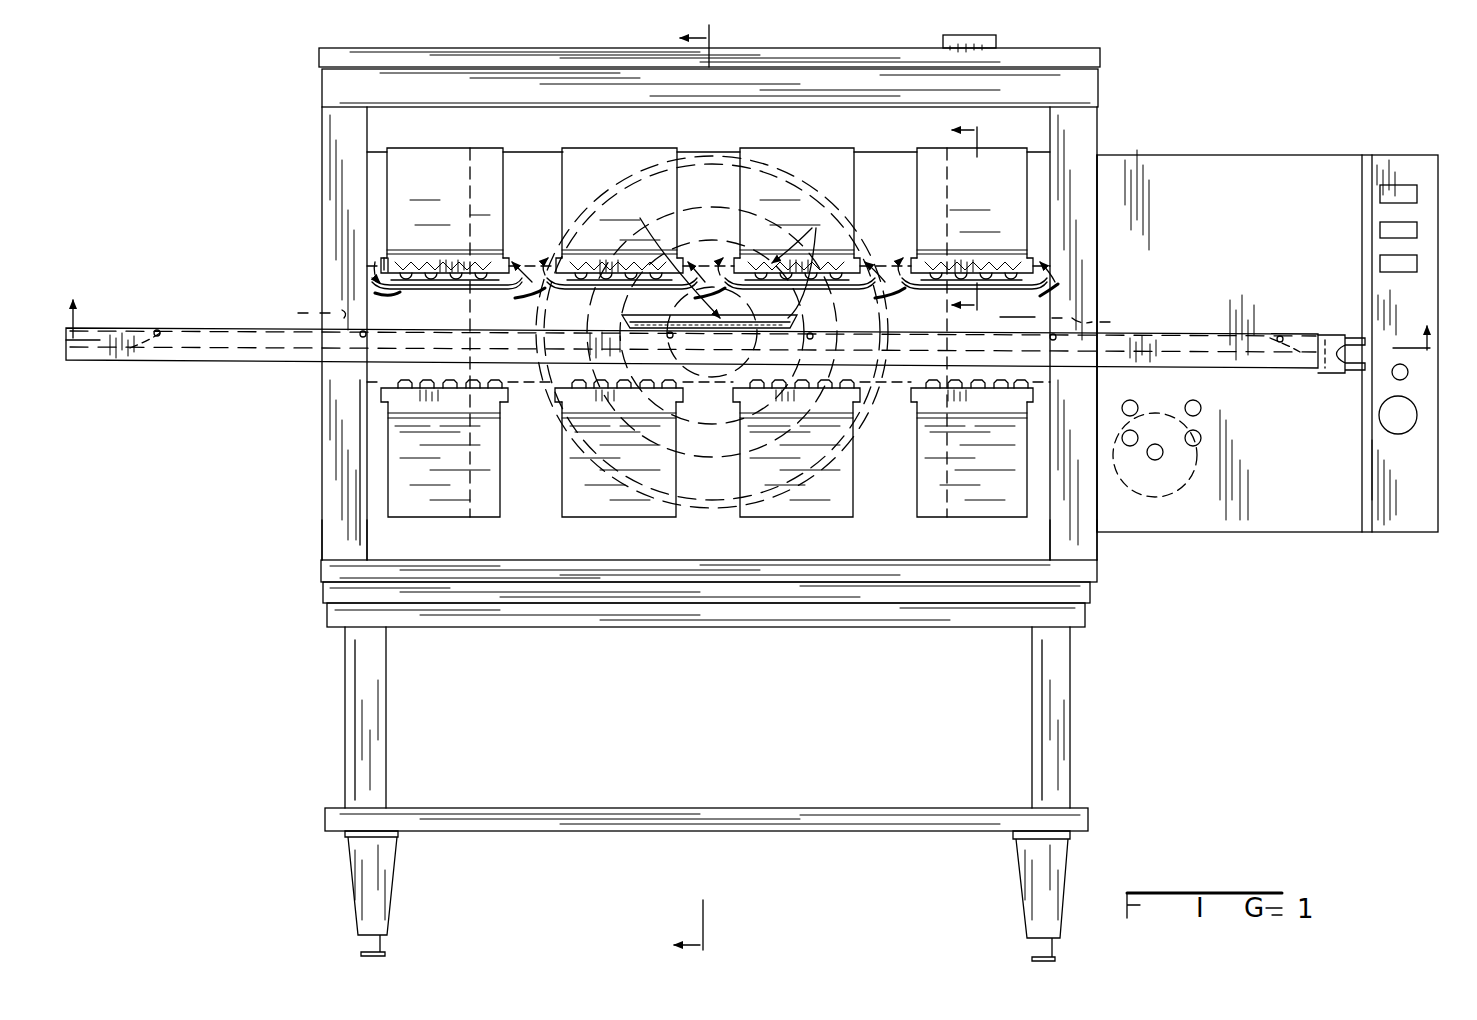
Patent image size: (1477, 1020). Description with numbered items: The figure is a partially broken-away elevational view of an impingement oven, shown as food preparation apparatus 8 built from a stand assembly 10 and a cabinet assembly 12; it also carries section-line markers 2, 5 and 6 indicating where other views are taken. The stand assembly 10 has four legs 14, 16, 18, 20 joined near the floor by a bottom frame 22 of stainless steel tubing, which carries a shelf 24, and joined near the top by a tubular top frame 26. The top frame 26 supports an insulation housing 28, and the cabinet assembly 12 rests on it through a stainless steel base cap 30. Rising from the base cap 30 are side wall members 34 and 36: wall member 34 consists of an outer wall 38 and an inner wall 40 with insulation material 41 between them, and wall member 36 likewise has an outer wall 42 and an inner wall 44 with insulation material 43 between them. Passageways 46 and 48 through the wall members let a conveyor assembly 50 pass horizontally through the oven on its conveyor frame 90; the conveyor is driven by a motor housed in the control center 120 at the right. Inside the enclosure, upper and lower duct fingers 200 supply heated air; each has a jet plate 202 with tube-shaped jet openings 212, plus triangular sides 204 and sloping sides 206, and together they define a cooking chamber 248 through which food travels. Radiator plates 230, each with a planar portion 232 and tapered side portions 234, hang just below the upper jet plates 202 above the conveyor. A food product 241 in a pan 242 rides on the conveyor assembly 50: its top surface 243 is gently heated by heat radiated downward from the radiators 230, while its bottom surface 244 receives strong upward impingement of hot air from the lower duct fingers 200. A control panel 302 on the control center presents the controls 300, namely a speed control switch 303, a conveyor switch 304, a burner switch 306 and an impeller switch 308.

The section line 2- 2 is at (678, 491).
The section line 5- 5 is at (953, 217).
The section line 6- 6 is at (749, 309).
The food preparation apparatus 8 is at (745, 624).
The stand assembly 10 is at (679, 794).
The cabinet assembly 12 is at (266, 403).
The leg 14 is at (417, 717).
The leg 16 is at (386, 680).
The leg 18 is at (990, 717).
The leg 20 is at (1032, 677).
The bottom frame 22 is at (1090, 822).
The shelf 24 is at (703, 808).
The top frame 26 is at (1085, 620).
The insulation housing 28 is at (1092, 596).
The base cap 30 is at (323, 566).
The side wall member 34 is at (318, 458).
The side wall member 36 is at (1100, 515).
The outer wall 38 is at (330, 540).
The inner wall 40 is at (368, 540).
The insulation material 41 is at (330, 480).
The outer wall 42 is at (1090, 560).
The insulation material 43 is at (1085, 386).
The inner wall 44 is at (1048, 534).
The passageway 46 is at (320, 310).
The passageway 48 is at (1095, 320).
The conveyor assembly 50 is at (200, 320).
The conveyor frame 90 is at (140, 328).
The control center 120 is at (1262, 155).
The duct finger 200 is at (392, 162).
The jet plate 202 is at (402, 270).
The triangular side 204 is at (385, 262).
The sloping side 206 is at (468, 150).
The jet opening 212 is at (442, 282).
The radiator plate 230 is at (395, 300).
The planar portion 232 is at (490, 286).
The tapered side portion 234 is at (385, 282).
The food product 241 is at (662, 253).
The pan 242 is at (798, 258).
The top surface 243 is at (660, 328).
The bottom surface 244 is at (712, 332).
The cooking chamber 248 is at (768, 379).
The controls 300 is at (1436, 157).
The control panel 302 is at (1424, 245).
The speed control switch 303 is at (1380, 416).
The conveyor switch 304 is at (1380, 264).
The burner switch 306 is at (1380, 230).
The impeller switch 308 is at (1380, 192).